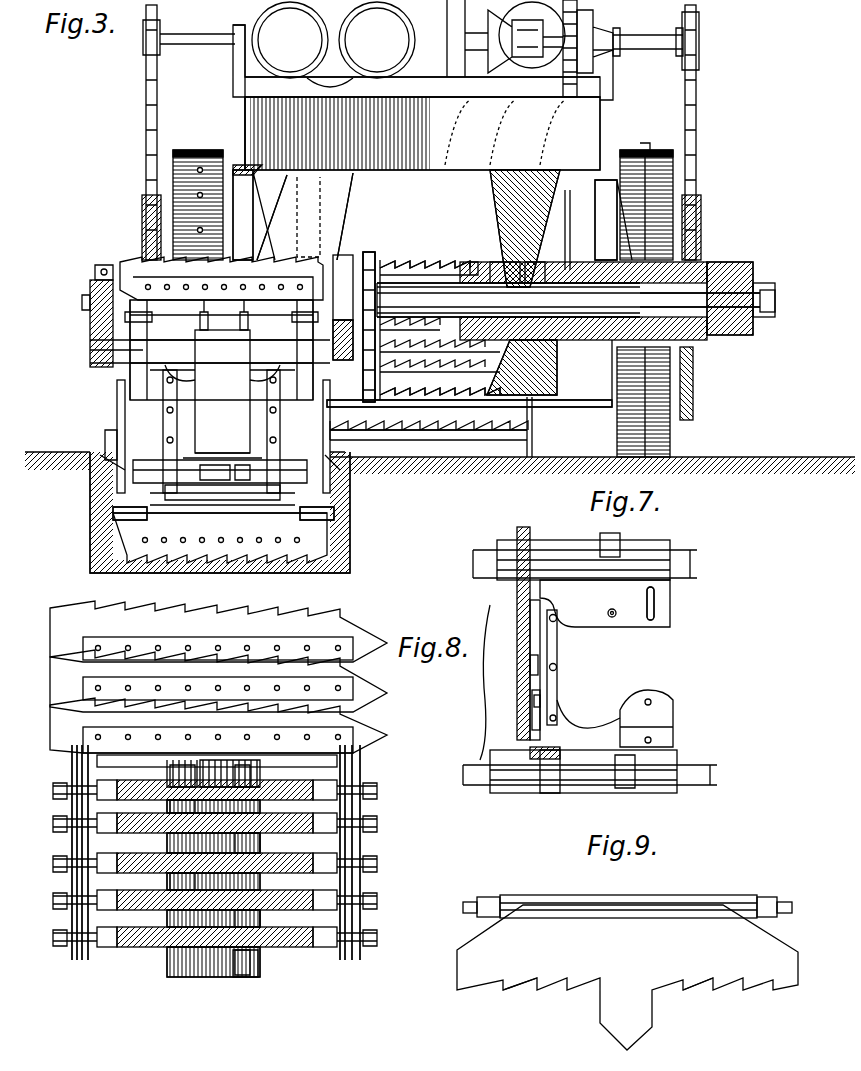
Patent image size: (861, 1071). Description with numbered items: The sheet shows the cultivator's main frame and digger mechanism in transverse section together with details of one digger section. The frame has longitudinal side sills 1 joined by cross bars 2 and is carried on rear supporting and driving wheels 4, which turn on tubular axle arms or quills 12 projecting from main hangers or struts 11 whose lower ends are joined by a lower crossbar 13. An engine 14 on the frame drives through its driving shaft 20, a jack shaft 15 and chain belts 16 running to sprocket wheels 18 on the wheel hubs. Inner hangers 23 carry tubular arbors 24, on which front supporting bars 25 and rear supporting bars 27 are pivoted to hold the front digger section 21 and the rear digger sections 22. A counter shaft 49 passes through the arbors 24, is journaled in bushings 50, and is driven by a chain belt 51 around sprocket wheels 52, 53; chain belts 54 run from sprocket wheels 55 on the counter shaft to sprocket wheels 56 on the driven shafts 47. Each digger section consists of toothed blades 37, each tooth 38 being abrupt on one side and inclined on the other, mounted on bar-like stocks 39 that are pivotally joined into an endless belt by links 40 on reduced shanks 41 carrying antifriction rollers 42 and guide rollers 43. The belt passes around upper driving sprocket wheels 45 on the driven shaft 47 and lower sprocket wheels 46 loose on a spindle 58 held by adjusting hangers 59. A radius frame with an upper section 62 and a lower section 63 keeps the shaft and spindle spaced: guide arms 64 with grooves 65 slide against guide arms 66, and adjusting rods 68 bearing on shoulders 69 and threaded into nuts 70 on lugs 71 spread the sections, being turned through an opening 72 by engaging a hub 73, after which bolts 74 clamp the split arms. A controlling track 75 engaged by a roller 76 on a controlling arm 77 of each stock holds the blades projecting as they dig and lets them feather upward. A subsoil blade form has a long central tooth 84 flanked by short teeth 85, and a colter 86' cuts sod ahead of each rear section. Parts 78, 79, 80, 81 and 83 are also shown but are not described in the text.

In FIG. 3, the side sills 1 is at (243, 110).
In FIG. 3, the cross bars 2 is at (422, 133).
In FIG. 3, the rear supporting wheels 4 is at (196, 156).
In FIG. 3, the hangers or struts 11 is at (425, 215).
In FIG. 3, the tubular arms or quills 12 is at (700, 302).
In FIG. 3, the lower crossbar 13 is at (578, 408).
In FIG. 3, the motor or engine 14 is at (333, 40).
In FIG. 3, the jack shaft 15 is at (660, 40).
In FIG. 3, the chain belts 16 is at (146, 102).
In FIG. 3, the sprocket wheel 18 is at (143, 203).
In FIG. 3, the driving shaft 20 is at (412, 58).
In FIG. 3, the front digger section 21 is at (425, 255).
In FIG. 3, the rear digger sections 22 is at (224, 513).
In FIG. 8, the rear digger sections 22 is at (365, 862).
In FIG. 3, the inner hangers or struts 23 is at (352, 180).
In FIG. 3, the tubular arbors 24 is at (508, 300).
In FIG. 3, the front supporting bars 25 is at (534, 278).
In FIG. 3, the rear supporting bars 27 is at (92, 290).
In FIG. 3, the digger blades 37 is at (250, 265).
In FIG. 8, the digger blades 37 is at (130, 965).
In FIG. 8, the tooth 38 is at (310, 622).
In FIG. 8, the stock or supporting body 39 is at (297, 975).
In FIG. 9, the stock or supporting body 39 is at (737, 897).
In FIG. 8, the links 40 is at (378, 830).
In FIG. 8, the reduced shanks 41 is at (378, 900).
In FIG. 8, the antifriction roller 42 is at (80, 958).
In FIG. 8, the guide roller 43 is at (55, 948).
In FIG. 3, the upper driving sprocket wheels 45 is at (148, 326).
In FIG. 3, the lower supporting sprocket wheels 46 is at (113, 512).
In FIG. 3, the upper driven shaft 47 is at (90, 352).
In FIG. 8, the upper driven shaft 47 is at (55, 795).
In FIG. 7, the upper driven shaft 47 is at (697, 560).
In FIG. 3, the counter shaft 49 is at (508, 300).
In FIG. 3, the bearings or bushings 50 is at (590, 355).
In FIG. 3, the chain belt 51 is at (567, 86).
In FIG. 3, the sprocket wheel 52 is at (527, 62).
In FIG. 3, the sprocket wheel 53 is at (568, 250).
In FIG. 3, the chain belts 54 is at (374, 262).
In FIG. 3, the sprocket wheel 55 is at (371, 262).
In FIG. 3, the sprocket wheel 56 is at (370, 410).
In FIG. 7, the spindle 58 is at (717, 776).
In FIG. 3, the adjusting hangers 59 is at (117, 397).
In FIG. 3, the upper section 62 is at (222, 360).
In FIG. 7, the upper section 62 is at (672, 603).
In FIG. 3, the lower section 63 is at (234, 472).
In FIG. 7, the lower section 63 is at (675, 735).
In FIG. 3, the guide arms 64 is at (265, 431).
In FIG. 7, the guide arms 64 is at (558, 650).
In FIG. 7, the longitudinal groove 65 is at (560, 746).
In FIG. 3, the guide arms 66 is at (258, 360).
In FIG. 7, the guide arms 66 is at (517, 598).
In FIG. 7, the adjusting rods 68 is at (530, 645).
In FIG. 7, the abutment or shoulder 69 is at (556, 615).
In FIG. 7, the screw nut 70 is at (530, 700).
In FIG. 7, the lug 71 is at (532, 712).
In FIG. 7, the opening 72 is at (525, 668).
In FIG. 7, the enlargement or hub 73 is at (540, 680).
In FIG. 3, the bolts 74 is at (270, 405).
In FIG. 7, the bolts 74 is at (558, 664).
In FIG. 3, the front controlling rail or track 75 is at (185, 500).
In FIG. 3, the antifriction roller 76 is at (206, 312).
In FIG. 8, the antifriction roller 76 is at (198, 767).
In FIG. 3, the controlling arm 77 is at (246, 312).
In FIG. 8, the controlling arm 77 is at (247, 765).
In FIG. 3, the block 78 is at (222, 391).
In FIG. 8, the block 78 is at (262, 775).
In FIG. 3, the comb 79 is at (222, 449).
In FIG. 8, the comb 79 is at (172, 977).
In FIG. 7, the slot 80 is at (655, 590).
In FIG. 7, the slot 81 is at (655, 618).
In FIG. 7, the line 83 is at (487, 683).
In FIG. 9, the central tooth 84 is at (627, 977).
In FIG. 9, the short teeth 85 is at (540, 990).
In FIG. 3, the colter 86' is at (88, 445).